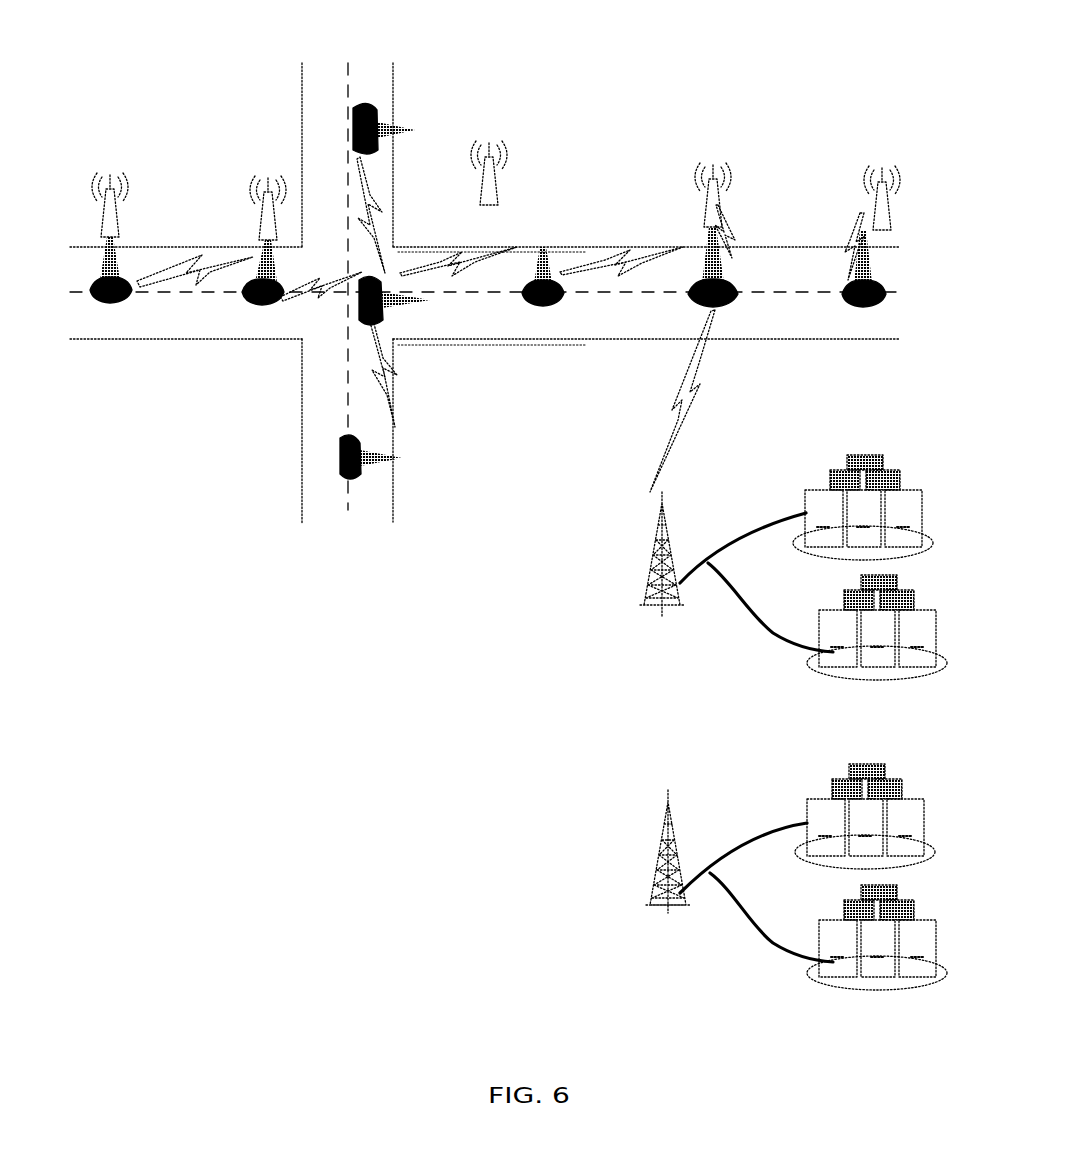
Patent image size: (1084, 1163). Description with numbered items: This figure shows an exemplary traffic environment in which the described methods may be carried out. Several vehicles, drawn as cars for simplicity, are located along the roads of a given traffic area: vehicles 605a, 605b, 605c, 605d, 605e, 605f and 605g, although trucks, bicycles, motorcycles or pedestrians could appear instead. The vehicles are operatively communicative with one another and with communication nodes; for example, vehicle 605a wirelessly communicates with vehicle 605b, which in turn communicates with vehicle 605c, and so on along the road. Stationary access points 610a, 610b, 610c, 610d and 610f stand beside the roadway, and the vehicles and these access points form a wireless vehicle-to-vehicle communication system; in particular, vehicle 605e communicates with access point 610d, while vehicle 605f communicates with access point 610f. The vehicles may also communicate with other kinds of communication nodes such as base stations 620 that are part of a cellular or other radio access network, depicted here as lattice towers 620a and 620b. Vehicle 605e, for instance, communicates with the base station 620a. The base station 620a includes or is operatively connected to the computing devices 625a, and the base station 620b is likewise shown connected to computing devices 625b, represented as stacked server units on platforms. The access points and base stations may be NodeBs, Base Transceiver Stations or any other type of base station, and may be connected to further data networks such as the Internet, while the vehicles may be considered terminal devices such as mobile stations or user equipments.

The vehicle 605a is at (120, 305).
The vehicle 605b is at (270, 305).
The vehicle 605c is at (380, 305).
The vehicle 605d is at (543, 305).
The vehicle 605e is at (733, 298).
The vehicle 605f is at (850, 248).
The vehicle 605g is at (365, 103).
The access point 610a is at (110, 172).
The access point 610b is at (280, 173).
The access point 610c is at (488, 137).
The access point 610d is at (712, 157).
The access point 610f is at (878, 162).
The base station 620 is at (192, 280).
The base station 620a is at (640, 591).
The base station 620b is at (650, 852).
The computing device 625a is at (827, 470).
The computing device 625b is at (837, 795).